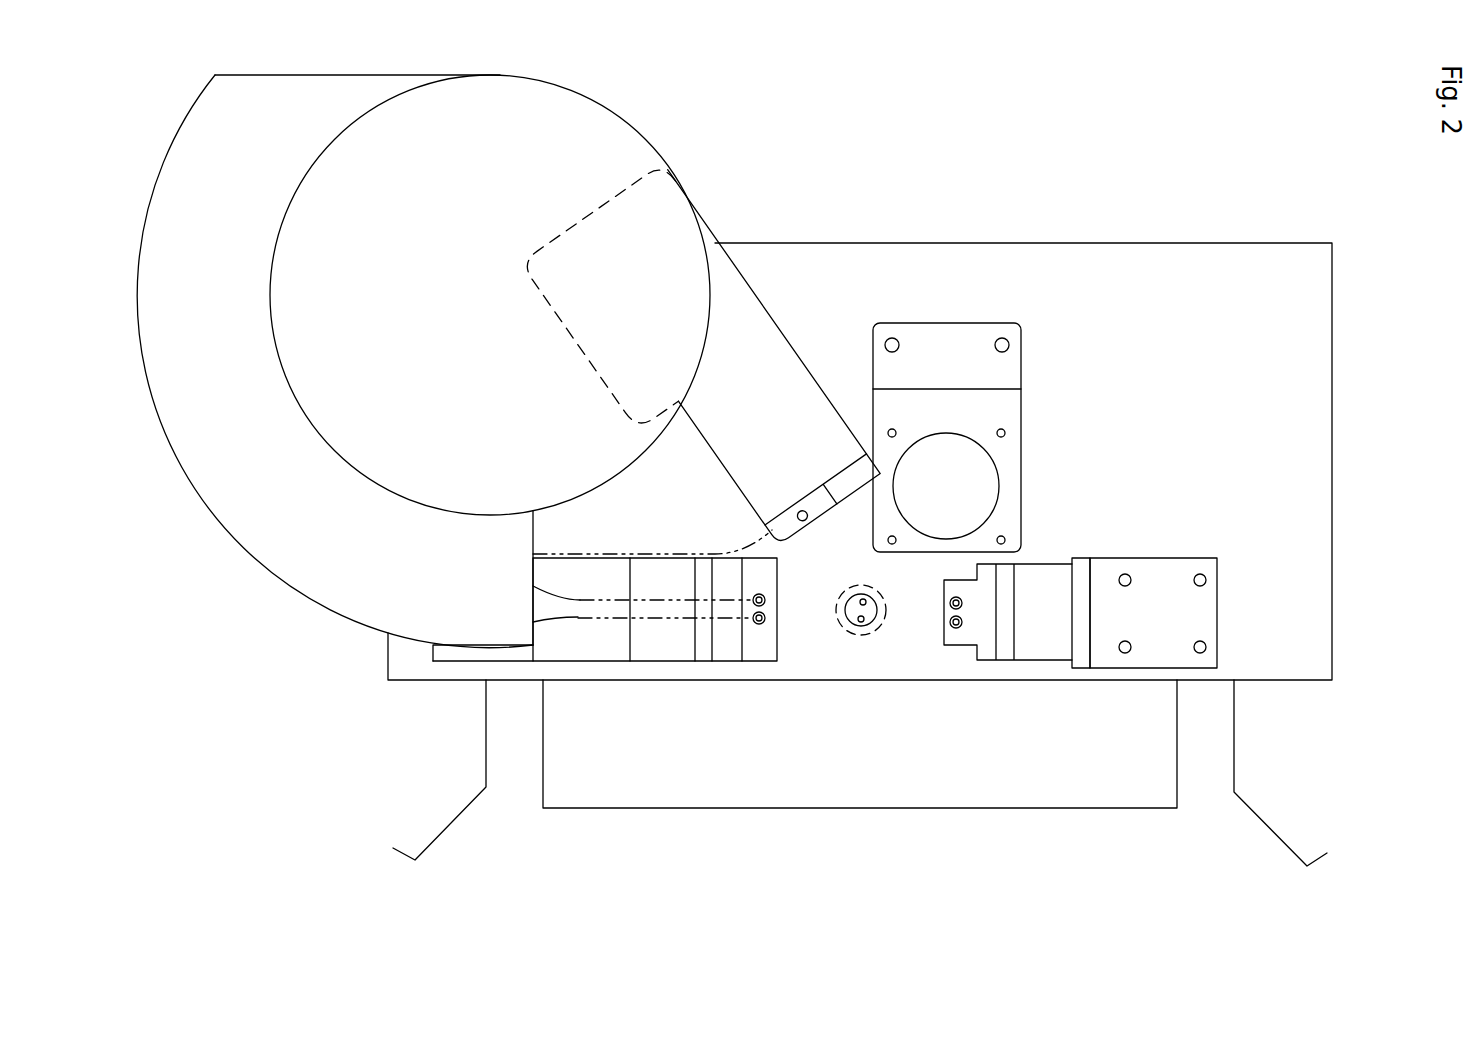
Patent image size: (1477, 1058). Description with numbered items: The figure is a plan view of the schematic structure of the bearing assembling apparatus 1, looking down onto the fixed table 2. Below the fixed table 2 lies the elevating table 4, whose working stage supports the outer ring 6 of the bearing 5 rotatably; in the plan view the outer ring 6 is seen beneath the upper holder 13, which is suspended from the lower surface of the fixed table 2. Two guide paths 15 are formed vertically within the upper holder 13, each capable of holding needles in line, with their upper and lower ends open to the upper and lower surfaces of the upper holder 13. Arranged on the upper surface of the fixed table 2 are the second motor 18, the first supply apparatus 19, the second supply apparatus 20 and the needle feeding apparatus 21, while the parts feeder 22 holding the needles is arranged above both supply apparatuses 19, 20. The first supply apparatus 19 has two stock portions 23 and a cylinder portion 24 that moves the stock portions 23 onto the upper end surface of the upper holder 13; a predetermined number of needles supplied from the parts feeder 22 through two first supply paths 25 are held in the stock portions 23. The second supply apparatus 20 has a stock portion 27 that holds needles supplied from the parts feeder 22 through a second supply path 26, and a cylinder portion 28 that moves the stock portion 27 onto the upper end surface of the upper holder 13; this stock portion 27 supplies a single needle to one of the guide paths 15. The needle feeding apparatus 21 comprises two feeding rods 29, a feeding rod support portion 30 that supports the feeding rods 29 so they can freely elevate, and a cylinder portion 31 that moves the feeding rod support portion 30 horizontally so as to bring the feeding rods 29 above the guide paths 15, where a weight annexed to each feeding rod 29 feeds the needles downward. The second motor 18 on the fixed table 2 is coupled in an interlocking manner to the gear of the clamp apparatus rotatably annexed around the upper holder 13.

The bearing assembling apparatus 1 is at (1140, 168).
The fixed table 2 is at (1229, 258).
The elevating table 4 is at (977, 808).
The bearing 5 is at (860, 675).
The outer ring 6 is at (855, 637).
The upper holder 13 is at (848, 617).
The guide path 15 is at (870, 607).
The second motor 18 is at (993, 487).
The first supply apparatus 19 is at (723, 662).
The second supply apparatus 20 is at (805, 365).
The needle feeding apparatus 21 is at (1110, 556).
The parts feeder 22 is at (340, 600).
The stock portion 23 is at (766, 618).
The cylinder portion 24 is at (560, 657).
The first supply path 25 is at (645, 602).
The second supply path 26 is at (615, 553).
The stock portion 27 is at (804, 511).
The cylinder portion 28 is at (735, 288).
The feeding rod 29 is at (949, 622).
The feeding rod support portion 30 is at (970, 640).
The cylinder portion 31 is at (1168, 575).